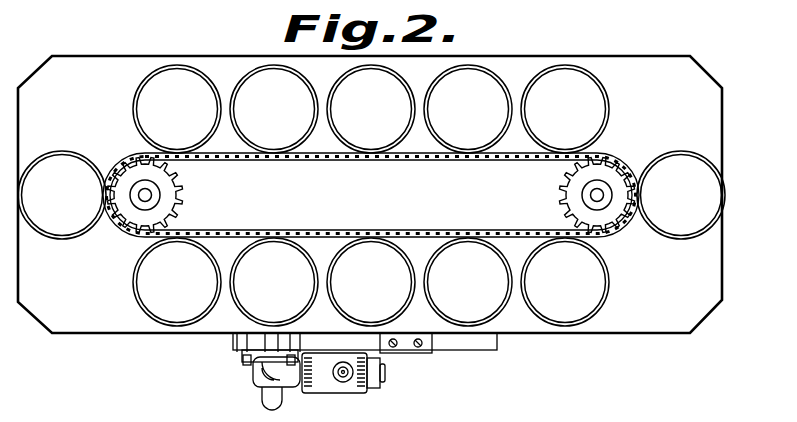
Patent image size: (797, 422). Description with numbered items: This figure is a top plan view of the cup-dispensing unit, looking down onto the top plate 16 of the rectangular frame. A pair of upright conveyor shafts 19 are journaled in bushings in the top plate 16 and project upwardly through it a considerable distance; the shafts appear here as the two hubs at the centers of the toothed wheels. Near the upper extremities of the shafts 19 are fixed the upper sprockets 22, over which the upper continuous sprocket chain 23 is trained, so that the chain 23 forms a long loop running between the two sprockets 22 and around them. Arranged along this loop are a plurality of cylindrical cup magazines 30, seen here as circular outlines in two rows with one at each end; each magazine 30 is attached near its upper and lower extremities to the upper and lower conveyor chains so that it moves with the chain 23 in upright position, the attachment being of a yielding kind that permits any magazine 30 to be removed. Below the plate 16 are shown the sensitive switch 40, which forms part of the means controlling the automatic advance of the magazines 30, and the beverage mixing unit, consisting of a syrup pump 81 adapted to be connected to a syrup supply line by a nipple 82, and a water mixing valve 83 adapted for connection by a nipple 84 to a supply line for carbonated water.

The top plate 16 is at (92, 320).
The conveyor shaft 19 is at (145, 195).
The sprocket 22 is at (173, 194).
The chain 23 is at (228, 231).
The cup magazine 30 is at (136, 98).
The sensitive switch 40 is at (405, 346).
The syrup pump 81 is at (258, 341).
The nipple 82 is at (262, 396).
The water mixing valve 83 is at (320, 378).
The nipple 84 is at (348, 386).